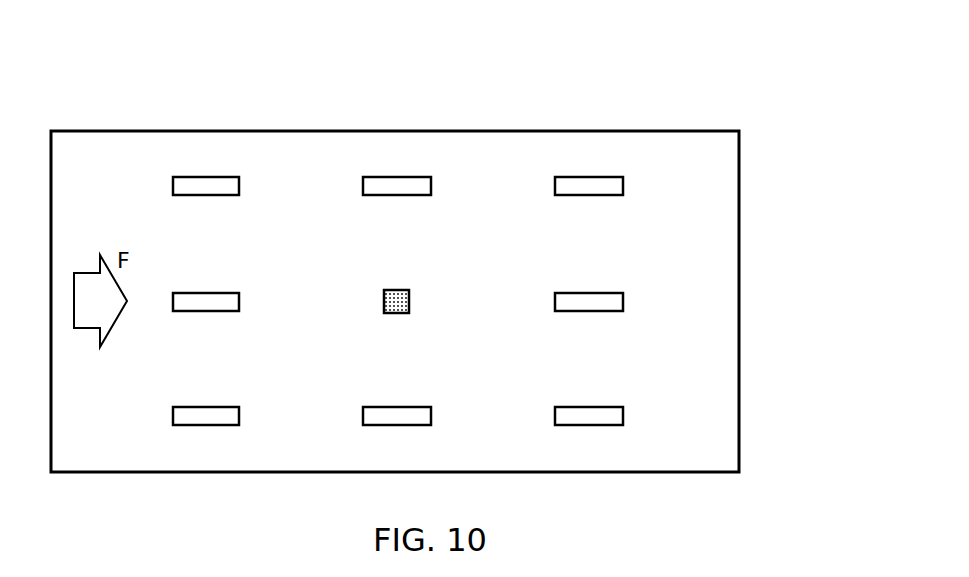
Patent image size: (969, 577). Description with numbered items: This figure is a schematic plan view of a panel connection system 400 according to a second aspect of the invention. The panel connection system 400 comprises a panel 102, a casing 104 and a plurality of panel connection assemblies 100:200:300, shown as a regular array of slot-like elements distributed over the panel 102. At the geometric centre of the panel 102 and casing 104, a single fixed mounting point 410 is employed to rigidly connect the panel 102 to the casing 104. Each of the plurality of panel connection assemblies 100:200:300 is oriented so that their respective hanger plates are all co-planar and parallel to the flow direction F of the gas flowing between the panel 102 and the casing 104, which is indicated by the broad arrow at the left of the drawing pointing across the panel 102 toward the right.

The panel connection assembly 100 is at (211, 177).
The panel connection assembly 200 is at (391, 177).
The panel connection assembly 300 is at (578, 177).
The panel 102 is at (716, 329).
The casing 104 is at (740, 393).
The panel connection system 400 is at (774, 190).
The fixed mounting point 410 is at (390, 313).